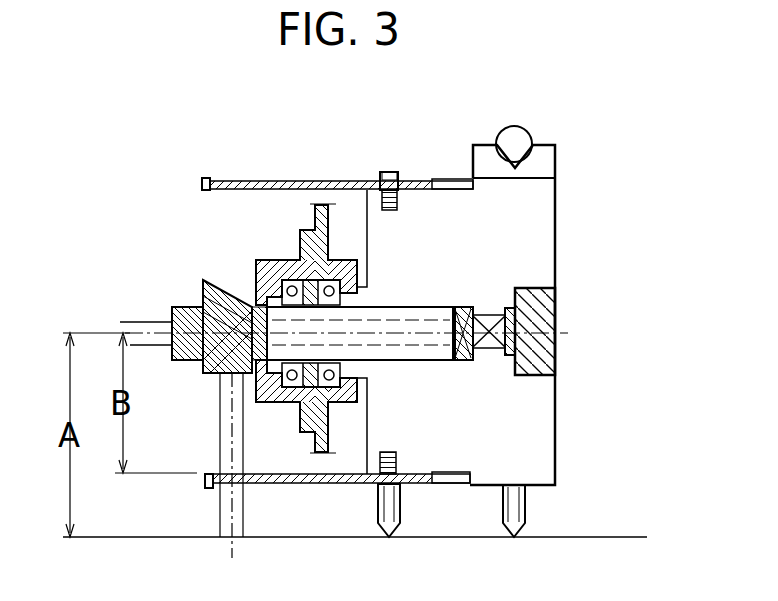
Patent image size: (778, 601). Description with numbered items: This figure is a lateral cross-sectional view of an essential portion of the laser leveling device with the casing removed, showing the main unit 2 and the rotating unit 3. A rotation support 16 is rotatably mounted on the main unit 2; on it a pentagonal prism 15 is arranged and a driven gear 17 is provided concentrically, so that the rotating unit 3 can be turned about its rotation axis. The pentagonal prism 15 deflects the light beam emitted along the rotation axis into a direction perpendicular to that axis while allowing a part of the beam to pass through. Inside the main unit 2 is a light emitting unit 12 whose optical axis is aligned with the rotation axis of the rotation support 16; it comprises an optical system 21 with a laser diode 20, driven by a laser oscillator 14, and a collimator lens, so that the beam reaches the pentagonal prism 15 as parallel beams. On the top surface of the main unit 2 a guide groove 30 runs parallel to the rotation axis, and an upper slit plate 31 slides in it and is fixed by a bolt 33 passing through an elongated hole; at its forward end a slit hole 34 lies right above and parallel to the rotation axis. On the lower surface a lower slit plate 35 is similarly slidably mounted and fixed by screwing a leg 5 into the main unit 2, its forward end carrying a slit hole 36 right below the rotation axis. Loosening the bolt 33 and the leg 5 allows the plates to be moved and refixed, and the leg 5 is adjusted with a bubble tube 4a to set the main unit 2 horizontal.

The main unit 2 is at (560, 202).
The rotating unit 3 is at (157, 297).
The bubble tube 4a is at (529, 130).
The leg 5 is at (399, 511).
The light emitting unit 12 is at (552, 380).
The laser oscillator 14 is at (537, 288).
The pentagonal prism 15 is at (190, 292).
The rotation support 16 is at (273, 260).
The driven gear 17 is at (311, 204).
The laser diode 20 is at (500, 308).
The optical system 21 is at (455, 306).
The guide groove 30 is at (448, 180).
The upper slit plate 31 is at (343, 178).
The bolt 33 is at (389, 173).
The slit hole 34 is at (236, 178).
The lower slit plate 35 is at (290, 482).
The slit hole 36 is at (210, 488).